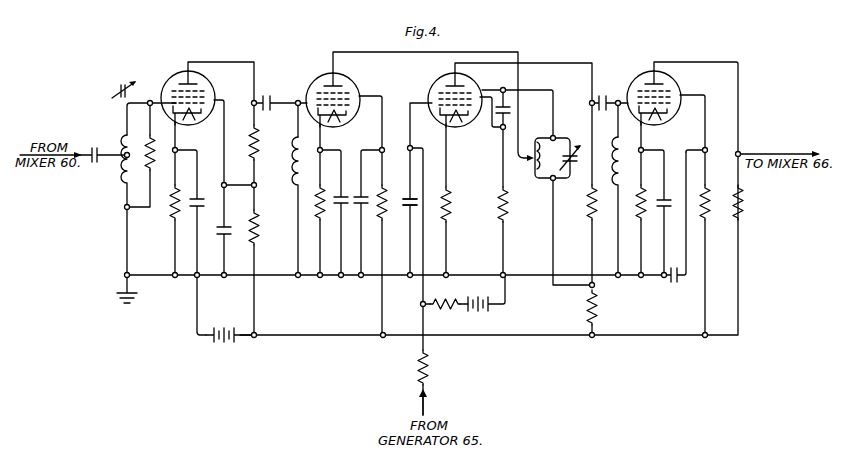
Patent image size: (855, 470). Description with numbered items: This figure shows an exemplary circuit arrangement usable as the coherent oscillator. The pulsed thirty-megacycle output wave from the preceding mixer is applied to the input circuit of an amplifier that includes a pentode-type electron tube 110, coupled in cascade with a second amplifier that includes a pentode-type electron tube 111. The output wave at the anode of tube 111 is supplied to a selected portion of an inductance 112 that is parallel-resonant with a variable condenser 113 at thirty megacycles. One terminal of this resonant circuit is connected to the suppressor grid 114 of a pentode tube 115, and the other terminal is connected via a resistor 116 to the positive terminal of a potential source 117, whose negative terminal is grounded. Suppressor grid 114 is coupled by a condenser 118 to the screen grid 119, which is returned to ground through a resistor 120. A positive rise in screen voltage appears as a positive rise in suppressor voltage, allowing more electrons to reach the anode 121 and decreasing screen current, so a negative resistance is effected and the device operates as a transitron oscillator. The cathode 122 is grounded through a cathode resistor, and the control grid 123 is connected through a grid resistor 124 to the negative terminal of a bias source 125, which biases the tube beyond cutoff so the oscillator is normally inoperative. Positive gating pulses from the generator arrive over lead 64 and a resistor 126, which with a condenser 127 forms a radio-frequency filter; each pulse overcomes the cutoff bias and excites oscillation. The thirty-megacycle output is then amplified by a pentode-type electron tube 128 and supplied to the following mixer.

The pentode-type electron tube 110 is at (181, 76).
The pentode-type electron tube 111 is at (320, 80).
The inductance 112 is at (535, 165).
The variable condenser 113 is at (582, 161).
The suppressor grid 114 is at (433, 80).
The pentode tube 115 is at (455, 109).
The resistor 116 is at (600, 309).
The potential source 117 is at (231, 340).
The condenser 118 is at (511, 106).
The screen grid 119 is at (433, 90).
The resistor 120 is at (510, 206).
The anode 121 is at (442, 75).
The cathode 122 is at (470, 132).
The control grid 123 is at (442, 124).
The grid resistor 124 is at (445, 305).
The bias source 125 is at (487, 300).
The resistor 126 is at (436, 355).
The condenser 127 is at (403, 206).
The pentode-type electron tube 128 is at (642, 76).
The lead 64 is at (422, 384).